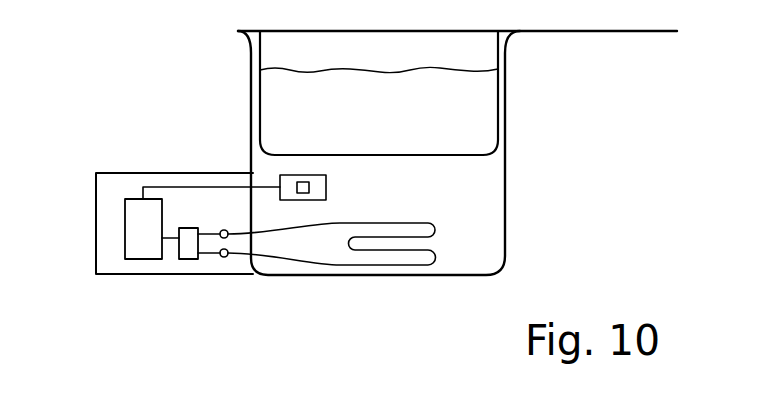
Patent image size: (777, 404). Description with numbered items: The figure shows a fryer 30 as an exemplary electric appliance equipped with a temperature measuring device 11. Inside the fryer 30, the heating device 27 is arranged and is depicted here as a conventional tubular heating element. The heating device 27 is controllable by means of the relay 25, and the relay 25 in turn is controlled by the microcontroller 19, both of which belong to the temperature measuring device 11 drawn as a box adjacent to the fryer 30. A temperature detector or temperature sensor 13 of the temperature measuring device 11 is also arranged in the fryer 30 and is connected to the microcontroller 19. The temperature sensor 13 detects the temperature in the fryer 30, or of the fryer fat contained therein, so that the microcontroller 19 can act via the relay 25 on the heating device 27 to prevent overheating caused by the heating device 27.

The temperature measuring device 11 is at (75, 175).
The temperature sensor 13 is at (303, 185).
The microcontroller 19 is at (140, 247).
The relay 25 is at (190, 250).
The heating device 27 is at (472, 241).
The fryer 30 is at (607, 137).